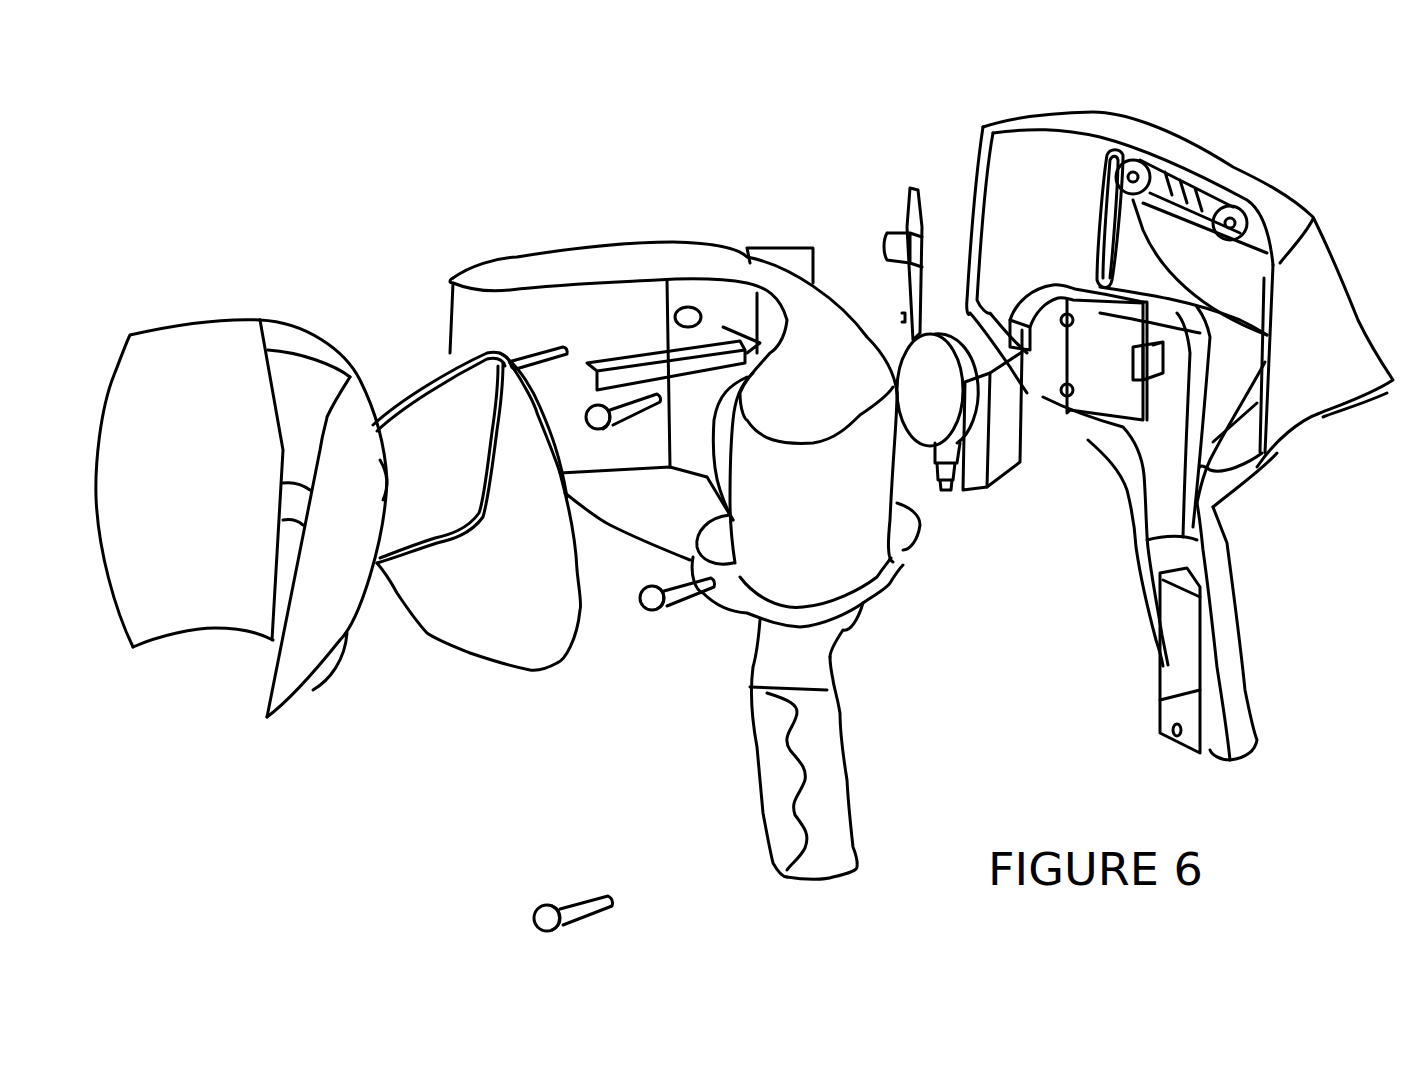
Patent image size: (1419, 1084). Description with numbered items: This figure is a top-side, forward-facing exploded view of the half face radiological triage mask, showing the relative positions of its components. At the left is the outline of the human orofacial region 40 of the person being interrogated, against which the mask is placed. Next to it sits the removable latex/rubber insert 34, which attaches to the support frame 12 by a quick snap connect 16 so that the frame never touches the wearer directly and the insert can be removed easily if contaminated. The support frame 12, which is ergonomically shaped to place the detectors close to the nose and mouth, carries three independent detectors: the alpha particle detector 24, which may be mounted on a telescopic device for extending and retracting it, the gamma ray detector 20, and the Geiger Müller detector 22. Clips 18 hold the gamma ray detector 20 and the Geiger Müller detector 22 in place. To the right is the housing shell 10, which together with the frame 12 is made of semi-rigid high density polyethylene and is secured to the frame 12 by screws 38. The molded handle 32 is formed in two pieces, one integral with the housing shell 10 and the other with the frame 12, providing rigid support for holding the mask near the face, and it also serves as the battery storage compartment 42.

The housing shell 10 is at (1327, 353).
The support frame 12 is at (670, 260).
The quick snap connect 16 is at (713, 547).
The clips 18 is at (905, 210).
The gamma ray detector 20 is at (1013, 430).
The Geiger Müller detector 22 is at (942, 407).
The alpha particle detector 24 is at (640, 372).
The molded handle 32 is at (823, 790).
The removable latex/rubber insert 34 is at (503, 600).
The screws 38 is at (653, 613).
The human orofacial region 40 is at (215, 378).
The battery storage compartment 42 is at (1177, 653).